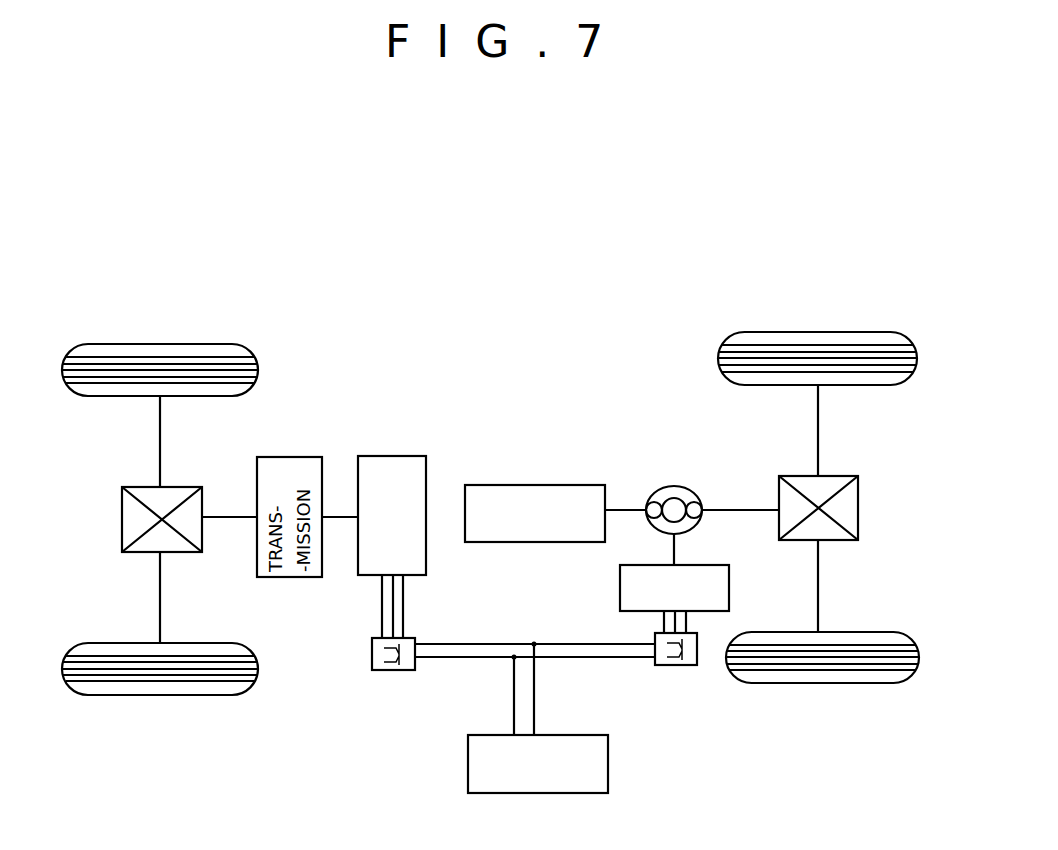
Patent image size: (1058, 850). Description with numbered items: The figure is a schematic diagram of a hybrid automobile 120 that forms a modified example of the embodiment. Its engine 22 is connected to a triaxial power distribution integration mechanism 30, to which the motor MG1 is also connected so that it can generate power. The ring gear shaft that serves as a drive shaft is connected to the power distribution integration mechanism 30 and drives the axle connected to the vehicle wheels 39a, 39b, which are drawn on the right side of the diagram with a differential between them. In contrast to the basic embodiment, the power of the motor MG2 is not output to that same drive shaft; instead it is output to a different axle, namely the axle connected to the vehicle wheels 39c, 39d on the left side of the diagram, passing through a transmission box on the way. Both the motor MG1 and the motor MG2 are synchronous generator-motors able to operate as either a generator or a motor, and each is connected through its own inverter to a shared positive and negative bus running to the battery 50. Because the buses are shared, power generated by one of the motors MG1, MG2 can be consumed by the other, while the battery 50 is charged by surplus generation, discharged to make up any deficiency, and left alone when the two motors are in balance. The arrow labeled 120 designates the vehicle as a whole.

The hybrid automobile 120 is at (512, 254).
The vehicle wheel 39a is at (817, 332).
The vehicle wheel 39b is at (817, 685).
The vehicle wheel 39c is at (162, 342).
The vehicle wheel 39d is at (157, 697).
The engine 22 is at (537, 484).
The power distribution integration mechanism 30 is at (668, 485).
The battery 50 is at (608, 758).
The motor MG1 is at (620, 586).
The motor MG2 is at (397, 457).